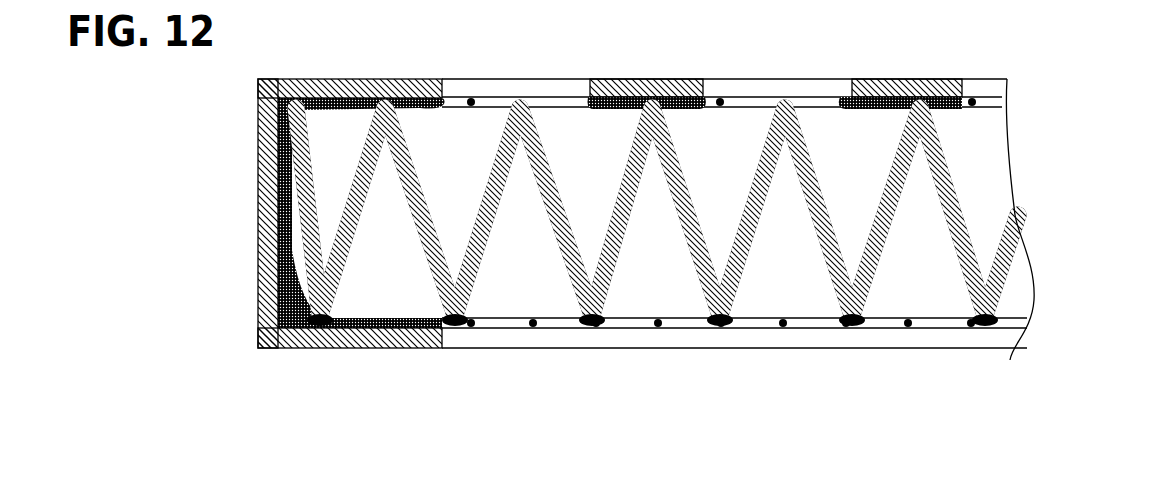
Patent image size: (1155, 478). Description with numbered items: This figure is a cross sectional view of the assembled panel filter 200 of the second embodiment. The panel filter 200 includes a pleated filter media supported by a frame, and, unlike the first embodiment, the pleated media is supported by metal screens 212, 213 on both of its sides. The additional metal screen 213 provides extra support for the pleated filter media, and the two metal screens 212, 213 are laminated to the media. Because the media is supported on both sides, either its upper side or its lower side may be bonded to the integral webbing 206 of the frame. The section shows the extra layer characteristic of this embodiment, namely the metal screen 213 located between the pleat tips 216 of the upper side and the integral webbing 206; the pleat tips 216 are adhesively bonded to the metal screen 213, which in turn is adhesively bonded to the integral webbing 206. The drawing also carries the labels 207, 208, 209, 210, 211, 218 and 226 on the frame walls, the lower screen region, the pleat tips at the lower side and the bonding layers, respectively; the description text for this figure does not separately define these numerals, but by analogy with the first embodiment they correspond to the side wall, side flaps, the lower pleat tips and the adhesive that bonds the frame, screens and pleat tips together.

The panel filter 200 is at (1036, 54).
The integral webbing 206 is at (638, 79).
The housing side wall 207 is at (258, 218).
The top plate 208 is at (341, 79).
The housing top wall 209 is at (258, 80).
The bottom plate 210 is at (311, 348).
The housing bottom wall 211 is at (258, 340).
The metal screen 212 is at (537, 328).
The metal screen 213 is at (788, 79).
The pleat tips 216 is at (543, 118).
The spring end 218 is at (700, 312).
The conductive adhesive 226 is at (436, 132).